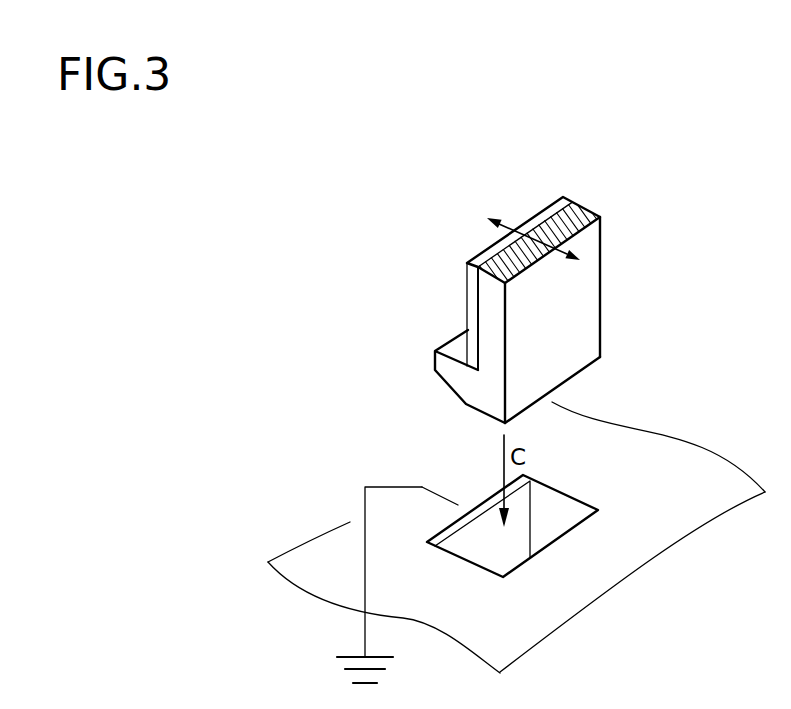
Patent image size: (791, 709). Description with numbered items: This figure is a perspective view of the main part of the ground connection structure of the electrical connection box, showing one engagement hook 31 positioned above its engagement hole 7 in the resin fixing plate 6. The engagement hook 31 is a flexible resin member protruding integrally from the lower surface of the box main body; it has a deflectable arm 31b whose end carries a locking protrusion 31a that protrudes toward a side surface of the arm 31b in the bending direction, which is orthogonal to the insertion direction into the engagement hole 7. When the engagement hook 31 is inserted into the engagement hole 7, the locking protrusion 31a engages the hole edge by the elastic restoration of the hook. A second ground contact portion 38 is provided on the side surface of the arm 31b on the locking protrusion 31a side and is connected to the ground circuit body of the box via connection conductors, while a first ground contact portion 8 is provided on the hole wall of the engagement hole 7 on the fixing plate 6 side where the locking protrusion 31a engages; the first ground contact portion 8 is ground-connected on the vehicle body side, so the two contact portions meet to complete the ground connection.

The engagement hook 31 is at (614, 315).
The locking protrusion 31a is at (442, 380).
The arm 31b is at (602, 273).
The second ground contact portion 38 is at (470, 307).
The engagement hole 7 is at (562, 510).
The fixing plate 6 is at (612, 562).
The first ground contact portion 8 is at (492, 547).